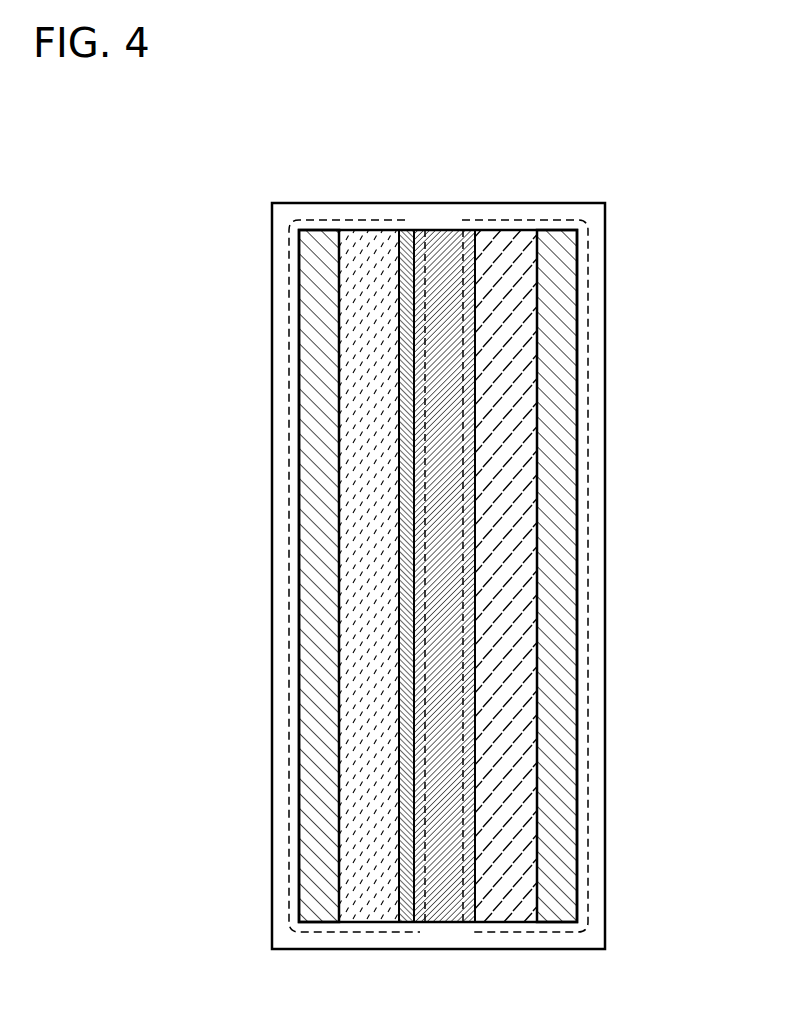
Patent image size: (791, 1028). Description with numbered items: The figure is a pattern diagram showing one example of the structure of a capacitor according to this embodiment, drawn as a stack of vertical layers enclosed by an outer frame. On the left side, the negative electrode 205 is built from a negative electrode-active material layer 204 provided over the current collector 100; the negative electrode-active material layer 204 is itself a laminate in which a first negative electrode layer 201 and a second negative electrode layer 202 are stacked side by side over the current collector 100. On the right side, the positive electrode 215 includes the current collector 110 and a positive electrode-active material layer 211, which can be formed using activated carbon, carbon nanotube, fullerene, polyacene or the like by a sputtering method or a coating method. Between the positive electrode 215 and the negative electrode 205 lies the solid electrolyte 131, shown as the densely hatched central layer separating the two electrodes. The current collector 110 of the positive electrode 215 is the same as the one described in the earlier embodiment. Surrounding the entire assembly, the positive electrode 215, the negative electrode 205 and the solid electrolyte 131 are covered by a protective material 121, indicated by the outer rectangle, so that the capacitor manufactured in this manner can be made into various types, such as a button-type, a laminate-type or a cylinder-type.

The current collector 100 is at (318, 912).
The current collector 110 is at (565, 915).
The protective material 121 is at (606, 613).
The solid electrolyte 131 is at (440, 230).
The first negative electrode layer 201 is at (370, 915).
The second negative electrode layer 202 is at (407, 915).
The negative electrode-active material layer 204 is at (387, 593).
The negative electrode 205 is at (289, 767).
The positive electrode-active material layer 211 is at (508, 912).
The positive electrode 215 is at (588, 775).